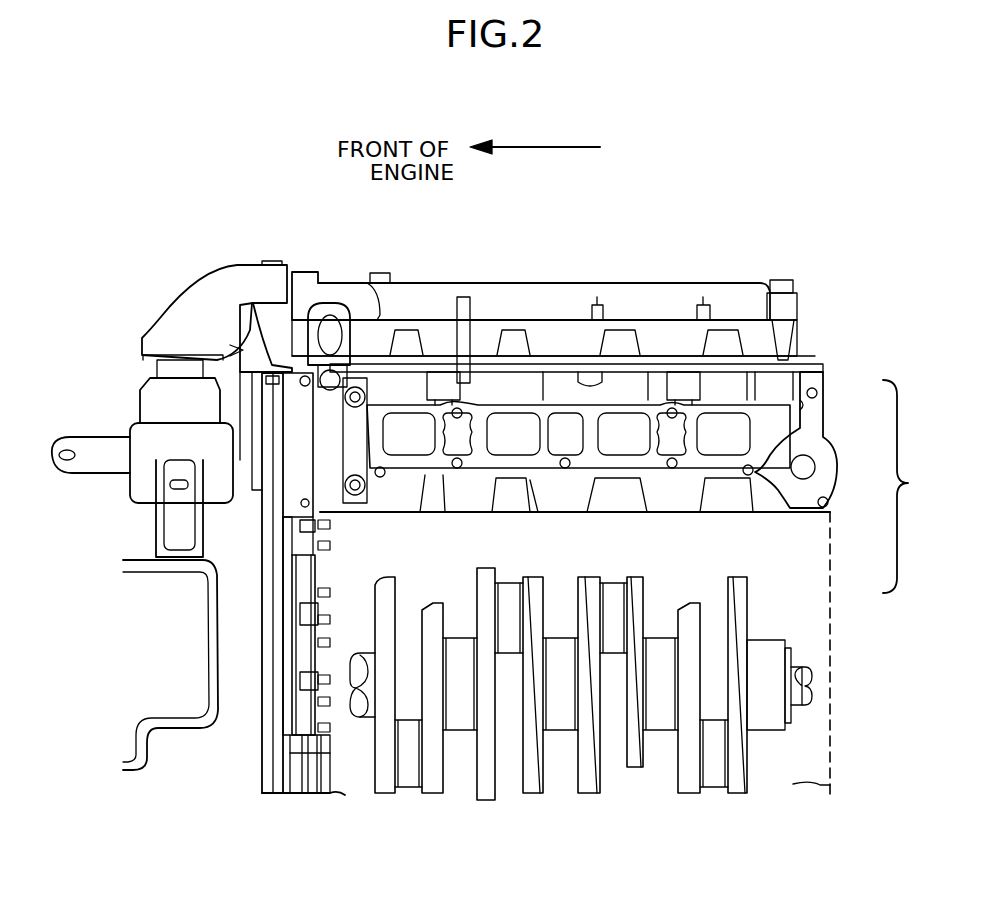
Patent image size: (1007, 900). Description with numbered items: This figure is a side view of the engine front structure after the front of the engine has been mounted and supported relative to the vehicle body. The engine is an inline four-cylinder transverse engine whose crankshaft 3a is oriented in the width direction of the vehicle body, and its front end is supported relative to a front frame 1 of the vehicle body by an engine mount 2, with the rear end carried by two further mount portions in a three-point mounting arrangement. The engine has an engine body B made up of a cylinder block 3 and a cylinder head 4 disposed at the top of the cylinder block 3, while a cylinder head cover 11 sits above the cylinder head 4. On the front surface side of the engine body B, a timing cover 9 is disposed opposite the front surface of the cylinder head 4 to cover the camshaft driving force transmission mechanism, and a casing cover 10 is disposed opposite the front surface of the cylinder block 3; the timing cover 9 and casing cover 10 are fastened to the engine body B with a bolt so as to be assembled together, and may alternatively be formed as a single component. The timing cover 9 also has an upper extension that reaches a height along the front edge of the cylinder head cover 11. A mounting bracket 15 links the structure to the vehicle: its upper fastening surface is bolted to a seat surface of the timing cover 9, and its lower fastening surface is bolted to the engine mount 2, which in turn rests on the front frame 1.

The front frame 1 is at (130, 560).
The engine mount 2 is at (138, 435).
The cylinder block 3 is at (830, 575).
The crankshaft 3a is at (650, 605).
The cylinder head 4 is at (820, 410).
The timing cover 9 is at (248, 357).
The casing cover 10 is at (303, 660).
The cylinder head cover 11 is at (434, 280).
The mounting bracket 15 is at (215, 292).
The engine body B is at (905, 486).